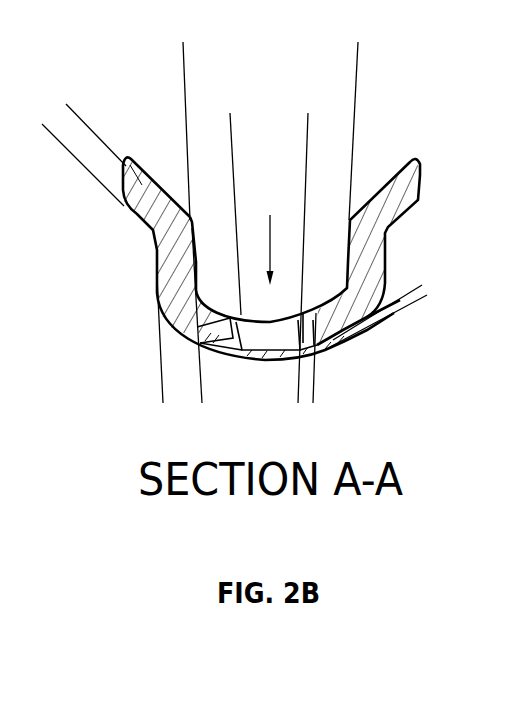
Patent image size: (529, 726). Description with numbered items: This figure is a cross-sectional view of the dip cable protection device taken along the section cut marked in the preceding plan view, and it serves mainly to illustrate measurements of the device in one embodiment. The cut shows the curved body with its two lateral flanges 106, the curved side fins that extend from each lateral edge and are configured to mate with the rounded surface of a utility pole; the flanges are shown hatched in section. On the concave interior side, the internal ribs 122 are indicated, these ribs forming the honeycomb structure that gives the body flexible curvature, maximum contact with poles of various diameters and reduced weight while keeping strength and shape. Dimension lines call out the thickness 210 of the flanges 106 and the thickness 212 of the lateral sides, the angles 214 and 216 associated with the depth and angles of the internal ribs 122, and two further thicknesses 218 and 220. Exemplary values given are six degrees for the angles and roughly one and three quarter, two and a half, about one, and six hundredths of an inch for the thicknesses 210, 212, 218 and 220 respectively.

The flanges 106 is at (137, 215).
The internal ribs 122 is at (270, 230).
The thickness of the flanges 210 is at (30, 147).
The thickness of the lateral sides 212 is at (232, 393).
The angle 214 is at (342, 125).
The angle 216 is at (346, 50).
The thickness 218 is at (268, 393).
The thickness 220 is at (398, 263).